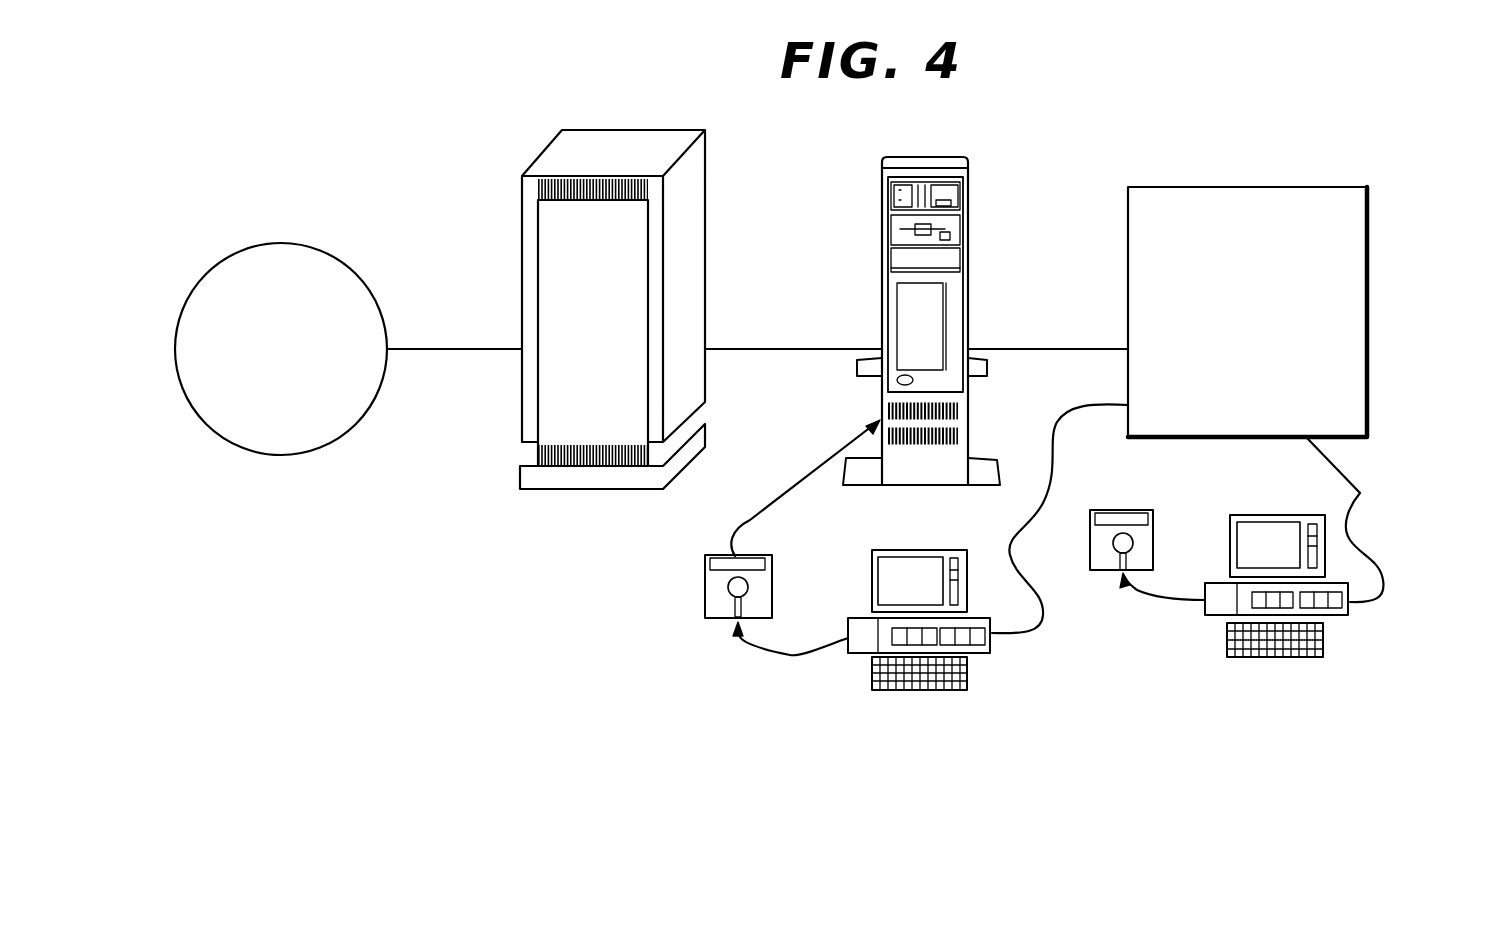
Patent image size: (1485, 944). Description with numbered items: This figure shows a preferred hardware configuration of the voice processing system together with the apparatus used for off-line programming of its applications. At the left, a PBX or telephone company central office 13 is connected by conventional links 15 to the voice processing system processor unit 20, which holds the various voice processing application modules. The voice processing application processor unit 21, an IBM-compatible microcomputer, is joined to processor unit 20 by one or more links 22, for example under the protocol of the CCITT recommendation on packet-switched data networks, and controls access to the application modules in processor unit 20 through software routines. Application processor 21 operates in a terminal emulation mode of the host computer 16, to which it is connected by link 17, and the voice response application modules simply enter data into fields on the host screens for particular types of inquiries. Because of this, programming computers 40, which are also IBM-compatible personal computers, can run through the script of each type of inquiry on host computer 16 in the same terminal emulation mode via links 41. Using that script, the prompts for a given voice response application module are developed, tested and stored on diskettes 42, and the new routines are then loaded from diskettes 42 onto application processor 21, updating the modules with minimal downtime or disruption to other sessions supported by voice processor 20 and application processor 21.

The PBX or telephone company central office 13 is at (290, 432).
The conventional links 15 is at (430, 349).
The host computer 16 is at (1228, 185).
The link 17 is at (998, 349).
The voice processing system processor unit 20 is at (695, 192).
The voice processing application processor unit 21 is at (960, 170).
The links 22 is at (725, 349).
The programming computers 40 is at (899, 538).
The links 41 is at (1040, 623).
The diskettes 42 is at (766, 556).